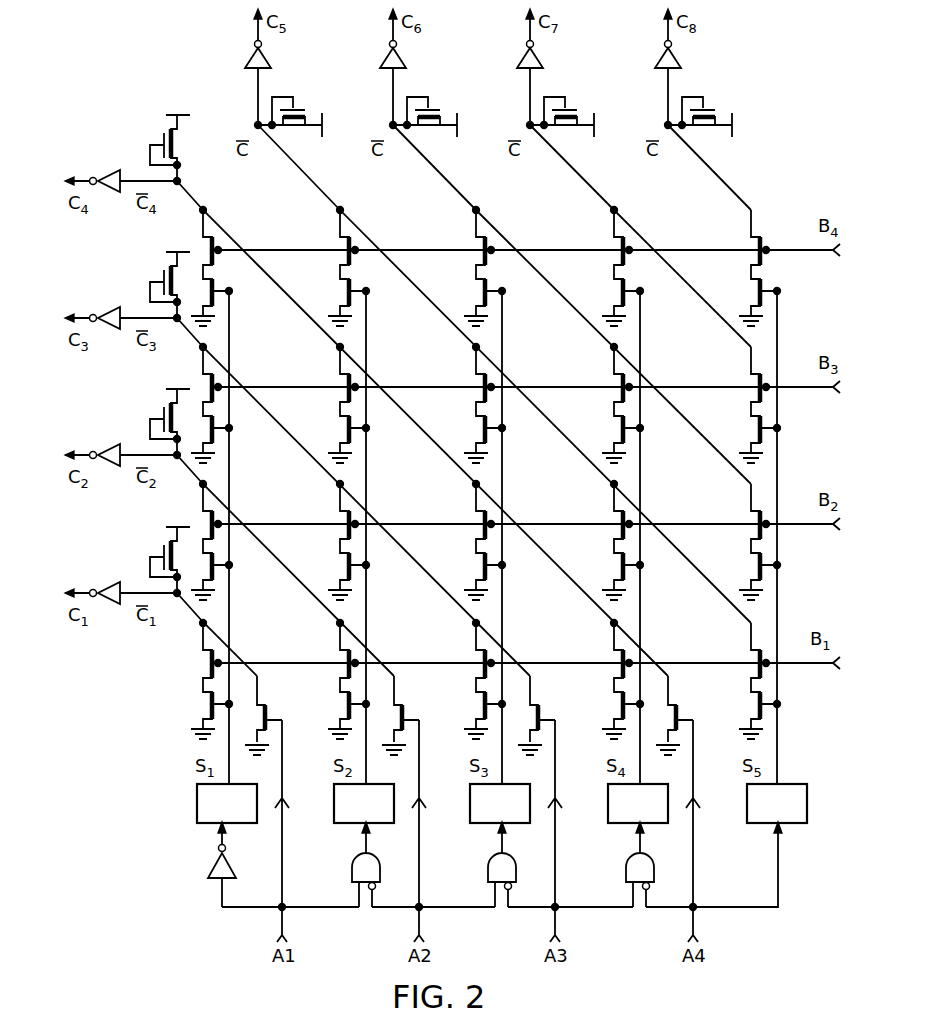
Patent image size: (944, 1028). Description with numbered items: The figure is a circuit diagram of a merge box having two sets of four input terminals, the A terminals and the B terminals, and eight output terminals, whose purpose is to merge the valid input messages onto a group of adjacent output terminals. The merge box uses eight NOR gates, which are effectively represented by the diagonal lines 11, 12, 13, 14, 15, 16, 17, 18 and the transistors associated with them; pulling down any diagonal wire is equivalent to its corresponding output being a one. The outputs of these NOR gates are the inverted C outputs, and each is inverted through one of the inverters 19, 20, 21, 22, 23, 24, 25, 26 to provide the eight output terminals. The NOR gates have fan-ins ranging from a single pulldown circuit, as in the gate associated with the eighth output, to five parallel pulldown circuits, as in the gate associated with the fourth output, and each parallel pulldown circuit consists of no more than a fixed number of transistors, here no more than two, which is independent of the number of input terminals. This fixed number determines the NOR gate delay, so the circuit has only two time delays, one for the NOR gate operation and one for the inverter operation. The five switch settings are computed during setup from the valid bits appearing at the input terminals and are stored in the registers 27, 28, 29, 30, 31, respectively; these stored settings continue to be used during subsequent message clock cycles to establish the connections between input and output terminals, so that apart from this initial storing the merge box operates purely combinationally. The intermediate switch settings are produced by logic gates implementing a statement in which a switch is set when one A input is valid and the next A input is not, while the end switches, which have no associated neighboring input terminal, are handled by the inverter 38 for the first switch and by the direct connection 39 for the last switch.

The diagonal line 11 is at (214, 632).
The diagonal line 12 is at (277, 559).
The diagonal line 13 is at (413, 558).
The diagonal line 14 is at (554, 565).
The diagonal line 15 is at (690, 562).
The diagonal line 16 is at (690, 423).
The diagonal line 17 is at (690, 287).
The diagonal line 18 is at (734, 193).
The inverter 19 is at (112, 582).
The inverter 20 is at (114, 444).
The inverter 21 is at (114, 307).
The inverter 22 is at (115, 170).
The inverter 23 is at (272, 62).
The inverter 24 is at (407, 62).
The inverter 25 is at (544, 62).
The inverter 26 is at (682, 62).
The register 27 is at (211, 826).
The register 28 is at (356, 826).
The register 29 is at (492, 826).
The register 30 is at (628, 826).
The register 31 is at (766, 826).
The inverter 38 is at (232, 866).
The direct connection 39 is at (780, 866).